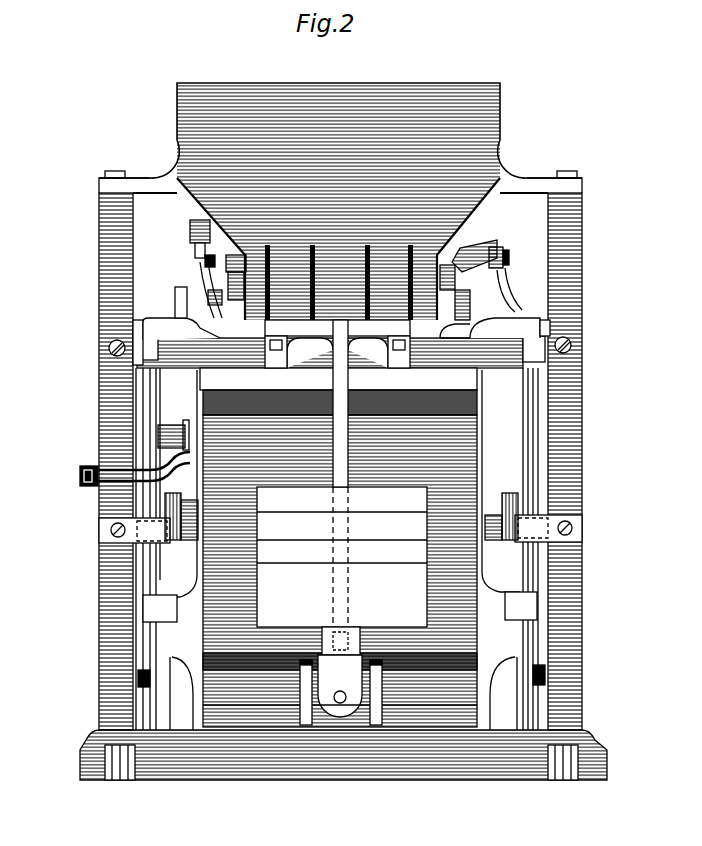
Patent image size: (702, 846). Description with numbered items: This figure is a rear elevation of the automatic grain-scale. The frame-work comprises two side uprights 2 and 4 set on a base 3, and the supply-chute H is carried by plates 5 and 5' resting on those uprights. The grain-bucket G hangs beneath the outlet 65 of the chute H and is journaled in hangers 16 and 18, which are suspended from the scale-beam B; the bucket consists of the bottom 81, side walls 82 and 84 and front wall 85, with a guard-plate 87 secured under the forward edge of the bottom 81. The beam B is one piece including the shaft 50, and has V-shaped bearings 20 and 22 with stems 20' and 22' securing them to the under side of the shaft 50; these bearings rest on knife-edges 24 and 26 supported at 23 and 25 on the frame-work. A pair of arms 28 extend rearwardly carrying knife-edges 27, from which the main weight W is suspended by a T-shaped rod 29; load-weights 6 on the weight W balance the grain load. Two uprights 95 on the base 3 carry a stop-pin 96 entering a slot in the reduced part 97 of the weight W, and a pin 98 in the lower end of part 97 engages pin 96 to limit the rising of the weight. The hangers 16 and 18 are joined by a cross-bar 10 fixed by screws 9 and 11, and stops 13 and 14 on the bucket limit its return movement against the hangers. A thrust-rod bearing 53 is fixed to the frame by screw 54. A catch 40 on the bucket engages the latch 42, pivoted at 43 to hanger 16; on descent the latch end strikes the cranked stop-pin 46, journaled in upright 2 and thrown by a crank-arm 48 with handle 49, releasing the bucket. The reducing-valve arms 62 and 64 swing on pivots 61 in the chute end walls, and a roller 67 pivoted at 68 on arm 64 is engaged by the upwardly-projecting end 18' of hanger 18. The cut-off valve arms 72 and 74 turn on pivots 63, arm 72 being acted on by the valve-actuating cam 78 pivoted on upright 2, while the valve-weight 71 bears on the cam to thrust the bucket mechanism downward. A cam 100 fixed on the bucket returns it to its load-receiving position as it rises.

The supply-chute H is at (362, 84).
The upright 2 is at (112, 402).
The upright 4 is at (565, 405).
The plate 5 is at (128, 167).
The plate 5' is at (552, 167).
The base 3 is at (278, 762).
The scale-beam B is at (330, 353).
The side wall 84 is at (338, 379).
The front wall 85 is at (430, 400).
The grain-bucket G is at (340, 571).
The main weight W is at (342, 557).
The load-weight 6 is at (415, 545).
The outlet 65 is at (355, 300).
The arm 28 is at (274, 360).
The knife-edge 27 is at (260, 360).
The T-shaped rod 29 is at (333, 378).
The reduced part 97 is at (355, 655).
The stop-pin 96 is at (300, 655).
The pin 98 is at (340, 703).
The upright 95 is at (305, 700).
The guard-plate 87 is at (430, 705).
The hanger 18 is at (375, 549).
The bottom 81 is at (455, 462).
The hanger 16 is at (150, 580).
The stop 13 is at (165, 612).
The stop 14 is at (520, 612).
The V-shaped bearing 53 is at (140, 525).
The screw 54 is at (118, 534).
The cam 100 is at (508, 478).
The catch 40 is at (341, 519).
The latch 42 is at (190, 450).
The pivot 43 is at (188, 420).
The stop-pin 46 is at (180, 466).
The crank-arm 48 is at (90, 466).
The handle 49 is at (84, 478).
The side wall 82 is at (199, 380).
The screw 9 is at (138, 678).
The screw 11 is at (545, 678).
The cross-bar 10 is at (185, 712).
The knife-edge 24 is at (148, 352).
The support 23 is at (110, 345).
The stem 20' is at (105, 328).
The V-shaped bearing 20 is at (179, 312).
The knife-edge 26 is at (535, 348).
The support 25 is at (568, 342).
The V-shaped bearing 22 is at (505, 311).
The stem 22' is at (576, 313).
The shaft 50 is at (480, 352).
The arm 74 is at (470, 326).
The valve-weight 71 is at (196, 228).
The pivot 61 is at (205, 262).
The arm 62 is at (229, 270).
The arm 72 is at (212, 284).
The pivot 63 is at (340, 305).
The valve-actuating cam 78 is at (182, 300).
The arm 64 is at (472, 260).
The roller 67 is at (497, 247).
The pivot 68 is at (509, 255).
The upwardly-projecting end 18' is at (515, 287).